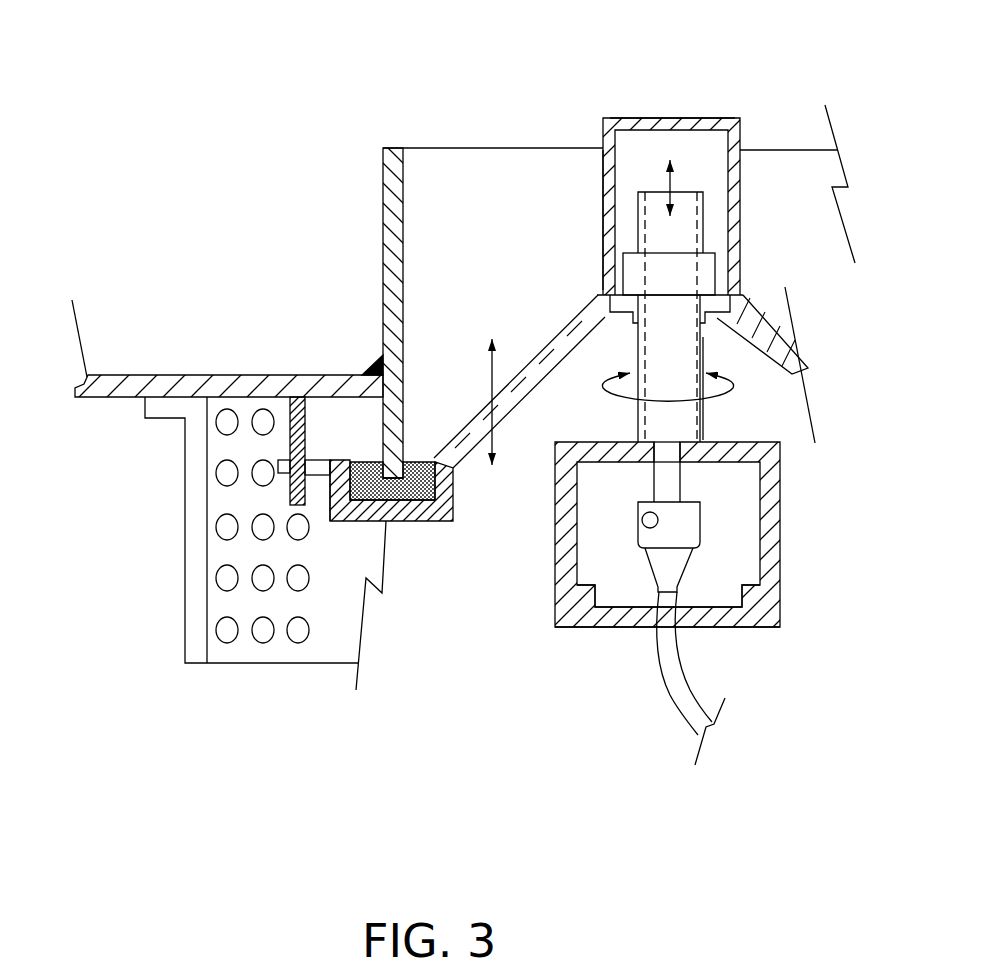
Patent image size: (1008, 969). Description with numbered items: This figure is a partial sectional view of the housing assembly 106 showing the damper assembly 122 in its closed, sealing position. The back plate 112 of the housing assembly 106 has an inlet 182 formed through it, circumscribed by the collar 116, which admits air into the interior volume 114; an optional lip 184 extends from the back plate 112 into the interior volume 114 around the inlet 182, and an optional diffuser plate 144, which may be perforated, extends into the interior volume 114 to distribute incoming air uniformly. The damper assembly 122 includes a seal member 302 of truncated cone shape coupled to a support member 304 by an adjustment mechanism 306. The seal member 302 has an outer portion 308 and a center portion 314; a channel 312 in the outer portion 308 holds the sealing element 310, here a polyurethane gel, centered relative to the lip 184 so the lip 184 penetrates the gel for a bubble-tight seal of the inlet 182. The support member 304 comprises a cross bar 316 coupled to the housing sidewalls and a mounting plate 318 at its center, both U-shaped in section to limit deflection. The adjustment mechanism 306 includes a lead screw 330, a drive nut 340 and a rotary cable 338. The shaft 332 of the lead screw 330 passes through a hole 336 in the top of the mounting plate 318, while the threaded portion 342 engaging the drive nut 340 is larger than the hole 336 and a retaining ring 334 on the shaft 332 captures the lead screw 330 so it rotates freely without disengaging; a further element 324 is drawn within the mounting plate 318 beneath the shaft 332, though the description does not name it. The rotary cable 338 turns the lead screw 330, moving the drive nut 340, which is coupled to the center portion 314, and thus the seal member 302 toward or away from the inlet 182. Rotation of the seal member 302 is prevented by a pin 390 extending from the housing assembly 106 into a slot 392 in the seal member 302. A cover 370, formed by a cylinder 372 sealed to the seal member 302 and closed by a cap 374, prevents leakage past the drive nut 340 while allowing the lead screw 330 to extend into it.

The housing assembly 106 is at (235, 362).
The back plate 112 is at (132, 383).
The interior volume 114 is at (468, 636).
The collar 116 is at (392, 212).
The damper assembly 122 is at (880, 352).
The diffuser plate 144 is at (187, 552).
The inlet 182 is at (437, 365).
The lip 184 is at (383, 455).
The seal member 302 is at (548, 332).
The support member 304 is at (593, 632).
The adjustment mechanism 306 is at (717, 417).
The outer portion 308 is at (443, 486).
The sealing element 310 is at (410, 522).
The channel 312 is at (433, 522).
The center portion 314 is at (637, 389).
The cross bar 316 is at (622, 628).
The mounting plate 318 is at (773, 548).
The nozzle 324 is at (650, 607).
The lead screw 330 is at (670, 350).
The shaft 332 is at (670, 453).
The retaining ring 334 is at (690, 467).
The hole 336 is at (703, 453).
The rotary cable 338 is at (682, 713).
The drive nut 340 is at (703, 272).
The threaded portion 342 is at (703, 337).
The cover 370 is at (623, 113).
The cylinder 372 is at (602, 138).
The cap 374 is at (700, 127).
The pin 390 is at (290, 506).
The slot 392 is at (290, 448).